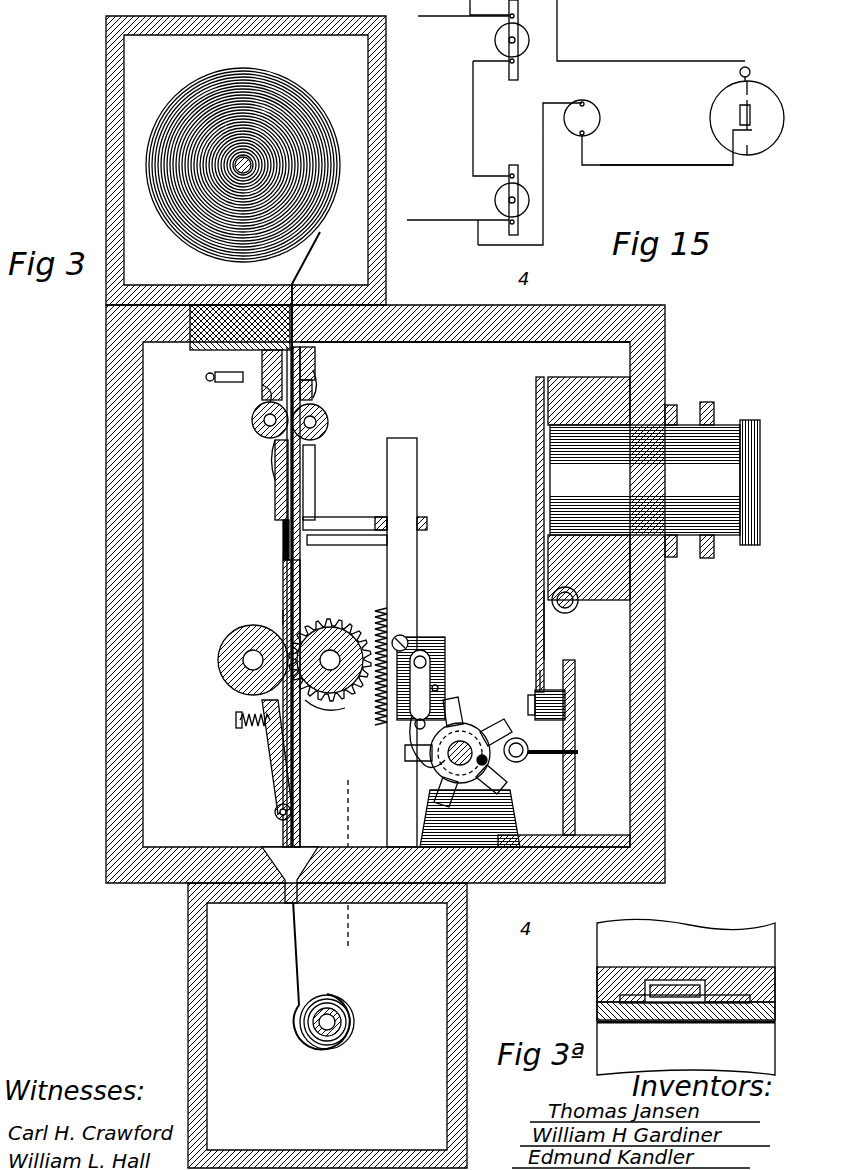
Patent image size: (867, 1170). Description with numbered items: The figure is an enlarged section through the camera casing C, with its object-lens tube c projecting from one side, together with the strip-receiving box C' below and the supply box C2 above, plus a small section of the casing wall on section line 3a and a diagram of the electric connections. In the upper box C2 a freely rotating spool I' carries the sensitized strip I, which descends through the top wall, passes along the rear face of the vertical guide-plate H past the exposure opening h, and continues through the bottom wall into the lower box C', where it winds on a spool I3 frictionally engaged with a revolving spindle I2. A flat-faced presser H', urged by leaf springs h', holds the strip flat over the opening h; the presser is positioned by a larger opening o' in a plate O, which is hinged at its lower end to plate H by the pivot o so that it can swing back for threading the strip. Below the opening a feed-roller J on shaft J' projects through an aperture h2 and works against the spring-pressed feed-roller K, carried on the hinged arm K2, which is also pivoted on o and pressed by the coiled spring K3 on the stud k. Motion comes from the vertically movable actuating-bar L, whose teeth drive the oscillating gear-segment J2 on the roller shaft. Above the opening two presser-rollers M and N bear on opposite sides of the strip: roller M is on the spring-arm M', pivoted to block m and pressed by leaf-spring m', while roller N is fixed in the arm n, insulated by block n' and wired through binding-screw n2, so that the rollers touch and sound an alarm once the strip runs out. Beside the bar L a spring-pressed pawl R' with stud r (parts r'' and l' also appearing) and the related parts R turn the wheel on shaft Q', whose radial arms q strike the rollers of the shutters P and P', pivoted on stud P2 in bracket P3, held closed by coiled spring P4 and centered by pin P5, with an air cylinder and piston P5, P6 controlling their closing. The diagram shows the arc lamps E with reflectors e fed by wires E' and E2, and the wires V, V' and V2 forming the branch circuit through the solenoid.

In FIG. 3, the casing C is at (410, 604).
In FIG. 3A, the casing C is at (686, 980).
In FIG. 3, the box C' is at (350, 1025).
In FIG. 3A, the box C' is at (686, 980).
In FIG. 3, the box or case C2 is at (388, 146).
In FIG. 3A, the box or case C2 is at (686, 1003).
In FIG. 3, the strip I is at (248, 558).
In FIG. 3, the spool I' is at (289, 126).
In FIG. 3, the revolving spindle I2 is at (340, 1014).
In FIG. 3, the spool I3 is at (338, 1030).
In FIG. 3, the object-lens tube c is at (752, 548).
In FIG. 3, the insulating block n' is at (240, 374).
In FIG. 3, the binding-screw n2 is at (210, 383).
In FIG. 3, the supporting-arm n is at (250, 394).
In FIG. 3, the presser-roller N is at (252, 417).
In FIG. 3, the presser-roller M is at (325, 416).
In FIG. 3, the spring-arm M' is at (357, 382).
In FIG. 3, the supporting-block m is at (328, 363).
In FIG. 3, the leaf-spring m' is at (326, 384).
In FIG. 3, the opening h is at (345, 495).
In FIG. 3, the springs h' is at (251, 460).
In FIG. 3, the aperture h2 is at (284, 617).
In FIG. 3, the guide-plate H is at (305, 703).
In FIG. 3, the presser H' is at (260, 480).
In FIG. 3, the actuating-bar L is at (386, 504).
In FIG. 3, the opening o' is at (270, 536).
In FIG. 3, the plate O is at (284, 554).
In FIG. 3, the feed-roller J is at (325, 724).
In FIG. 3, the shaft J' is at (330, 640).
In FIG. 3, the oscillating gear-segment J2 is at (327, 650).
In FIG. 3, the feed-roller K is at (218, 666).
In FIG. 3, the hinged arm K2 is at (268, 752).
In FIG. 3, the spring K3 is at (236, 718).
In FIG. 3, the stud k is at (240, 724).
In FIG. 3, the hinge or pivotal joint o is at (260, 810).
In FIG. 3, the shutter-actuating parts R is at (405, 758).
In FIG. 3, the spring-pressed pawl R' is at (433, 673).
In FIG. 3, the stud r is at (388, 744).
In FIG. 3, the pin r'' is at (389, 691).
In FIG. 3, the pin l' is at (395, 714).
In FIG. 3, the shaft Q' is at (456, 772).
In FIG. 3, the radial arms q is at (484, 752).
In FIG. 3, the shutter P is at (521, 534).
In FIG. 3, the shutter P' is at (565, 625).
In FIG. 3, the pivot-stud P2 is at (568, 705).
In FIG. 3, the bracket P3 is at (577, 768).
In FIG. 3, the coiled spring P4 is at (547, 688).
In FIG. 3, the stationary pin P5 is at (580, 748).
In FIG. 3, the piston P6 is at (578, 605).
In FIG. 3, the section line 3a is at (347, 865).
In FIG. 15, the electric-arc light E is at (519, 117).
In FIG. 15, the electric wire E' is at (458, 33).
In FIG. 15, the electric wire E2 is at (420, 234).
In FIG. 15, the reflector e is at (494, 34).
In FIG. 15, the wire V is at (627, 88).
In FIG. 15, the wire V' is at (666, 183).
In FIG. 15, the wire V2 is at (543, 100).